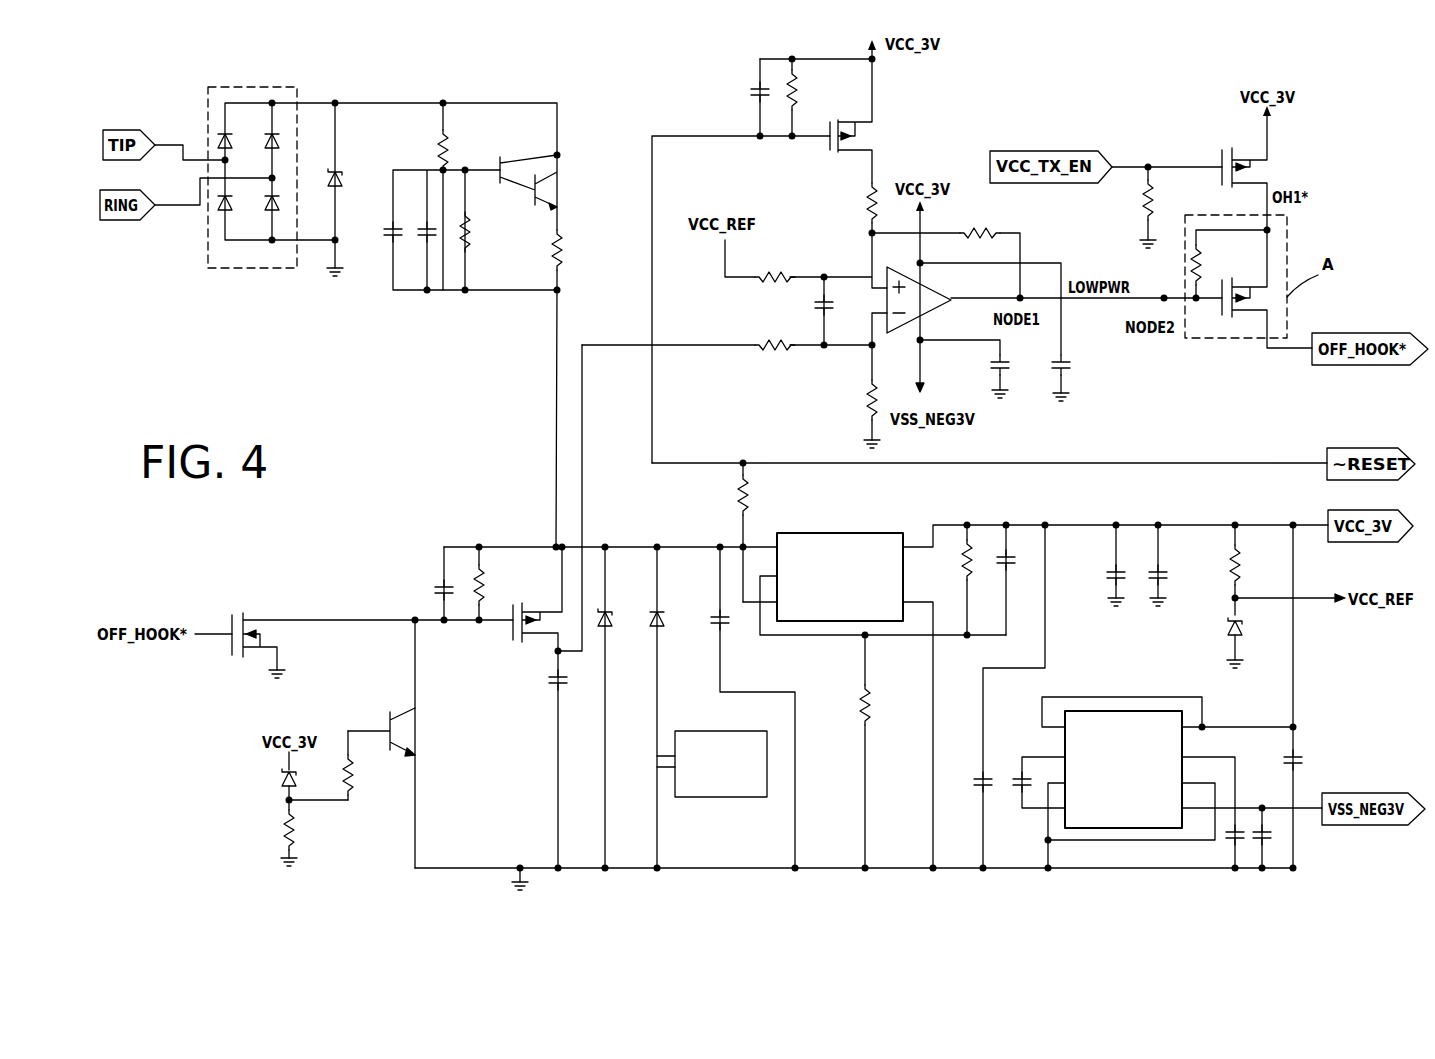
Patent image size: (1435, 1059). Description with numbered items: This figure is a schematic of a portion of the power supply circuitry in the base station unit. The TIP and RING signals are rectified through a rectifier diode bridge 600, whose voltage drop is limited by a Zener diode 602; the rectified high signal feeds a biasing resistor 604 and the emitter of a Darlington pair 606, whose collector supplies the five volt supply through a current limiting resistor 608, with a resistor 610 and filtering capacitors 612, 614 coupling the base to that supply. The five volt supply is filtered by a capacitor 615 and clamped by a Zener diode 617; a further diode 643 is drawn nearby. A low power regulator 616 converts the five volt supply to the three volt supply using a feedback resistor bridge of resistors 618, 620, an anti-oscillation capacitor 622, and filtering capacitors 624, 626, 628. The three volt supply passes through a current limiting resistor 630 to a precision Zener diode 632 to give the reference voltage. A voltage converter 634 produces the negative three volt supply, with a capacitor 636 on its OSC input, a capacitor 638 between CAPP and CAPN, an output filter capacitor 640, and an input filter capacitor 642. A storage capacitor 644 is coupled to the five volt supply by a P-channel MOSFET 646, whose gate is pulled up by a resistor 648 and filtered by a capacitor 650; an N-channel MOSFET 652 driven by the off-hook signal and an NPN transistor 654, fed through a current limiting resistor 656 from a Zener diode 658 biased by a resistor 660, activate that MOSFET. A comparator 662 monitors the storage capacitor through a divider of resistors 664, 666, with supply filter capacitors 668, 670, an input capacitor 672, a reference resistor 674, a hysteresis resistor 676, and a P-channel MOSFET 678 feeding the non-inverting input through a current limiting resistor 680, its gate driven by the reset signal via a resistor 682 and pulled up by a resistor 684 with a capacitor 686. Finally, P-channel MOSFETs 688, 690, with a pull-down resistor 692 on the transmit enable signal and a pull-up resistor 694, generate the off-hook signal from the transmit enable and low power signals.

The rectifier diode bridge 600 is at (265, 268).
The Zener diode 602 is at (338, 172).
The biasing resistor 604 is at (445, 158).
The Darlington pair 606 is at (548, 200).
The current limiting resistor 608 is at (561, 250).
The resistor 610 is at (470, 236).
The filtering capacitor 612 is at (390, 240).
The filtering capacitor 614 is at (430, 242).
The capacitor 615 is at (728, 622).
The low power regulator 616 is at (843, 533).
The Zener diode 617 is at (612, 625).
The resistor 618 is at (962, 560).
The resistor 620 is at (868, 700).
The capacitor 622 is at (1012, 560).
The filtering capacitor 624 is at (978, 792).
The filtering capacitor 626 is at (1108, 575).
The filtering capacitor 628 is at (1150, 575).
The current limiting resistor 630 is at (1230, 574).
The precision Zener diode 632 is at (1225, 626).
The voltage converter 634 is at (1142, 710).
The capacitor 636 is at (1228, 838).
The capacitor 638 is at (1014, 780).
The capacitor 640 is at (1270, 830).
The capacitor 642 is at (752, 800).
The diode 643 is at (665, 625).
The storage capacitor 644 is at (552, 682).
The P-channel MOSFET 646 is at (507, 642).
The resistor 648 is at (481, 592).
The filtering capacitor 650 is at (438, 590).
The N-channel MOSFET 652 is at (245, 620).
The NPN transistor 654 is at (410, 730).
The current limiting resistor 656 is at (352, 776).
The Zener diode 658 is at (283, 777).
The biasing resistor 660 is at (284, 828).
The comparator 662 is at (935, 295).
The resistor 664 is at (768, 350).
The resistor 666 is at (868, 402).
The filtering capacitor 668 is at (995, 370).
The filtering capacitor 670 is at (1067, 365).
The capacitor 672 is at (815, 303).
The resistor 674 is at (760, 275).
The resistor 676 is at (970, 228).
The P-channel MOSFET 678 is at (865, 128).
The current limiting resistor 680 is at (868, 212).
The resistor 682 is at (738, 490).
The resistor 684 is at (752, 92).
The capacitor 686 is at (797, 95).
The P-channel MOSFET 688 is at (1230, 152).
The P-channel MOSFET 690 is at (1245, 318).
The pull-down resistor 692 is at (1140, 205).
The pull-up resistor 694 is at (1225, 264).